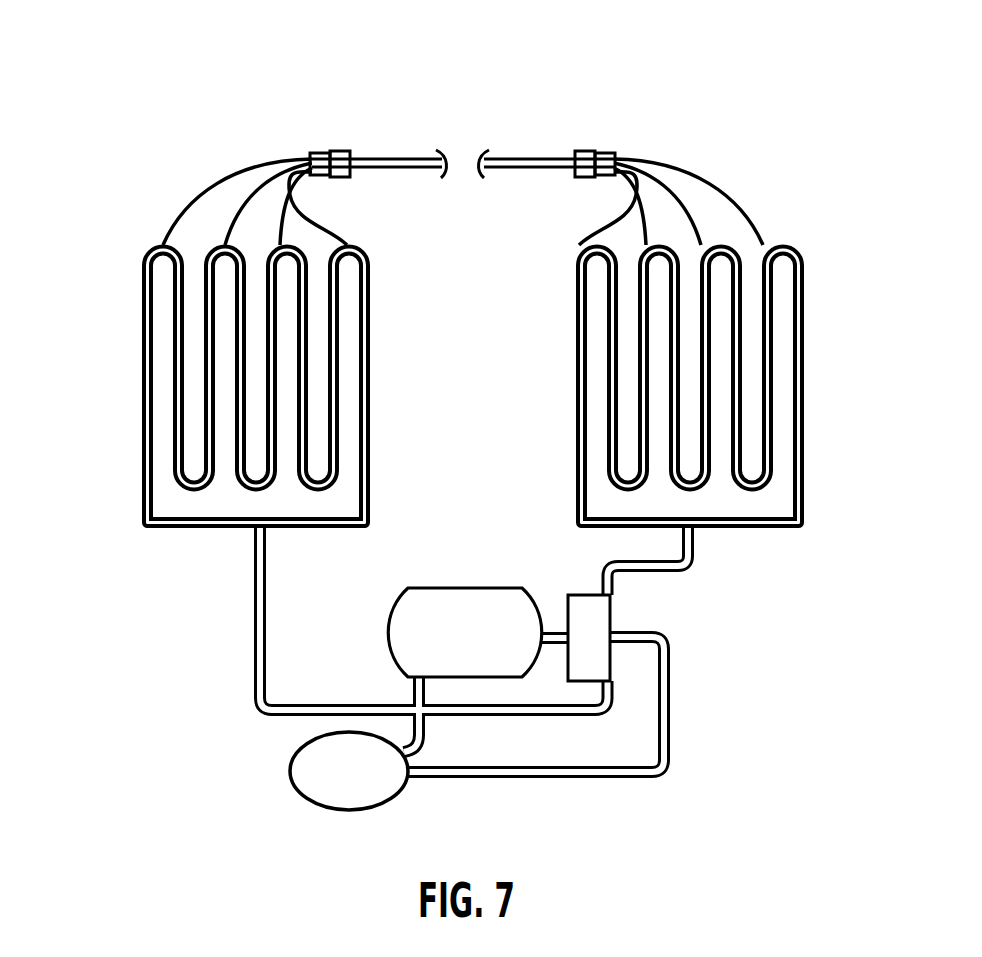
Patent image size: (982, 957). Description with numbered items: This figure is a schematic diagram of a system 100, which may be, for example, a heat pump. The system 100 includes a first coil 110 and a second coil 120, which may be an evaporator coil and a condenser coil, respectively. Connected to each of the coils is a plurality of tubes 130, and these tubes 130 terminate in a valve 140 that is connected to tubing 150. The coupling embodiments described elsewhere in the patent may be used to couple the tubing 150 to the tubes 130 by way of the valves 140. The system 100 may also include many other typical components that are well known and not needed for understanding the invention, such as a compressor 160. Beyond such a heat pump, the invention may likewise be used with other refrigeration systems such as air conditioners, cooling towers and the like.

The system 100 is at (432, 86).
The first coil 110 is at (142, 420).
The second coil 120 is at (806, 355).
The tubes 130 is at (233, 165).
The valve 140 is at (332, 150).
The tubing 150 is at (400, 157).
The compressor 160 is at (443, 587).